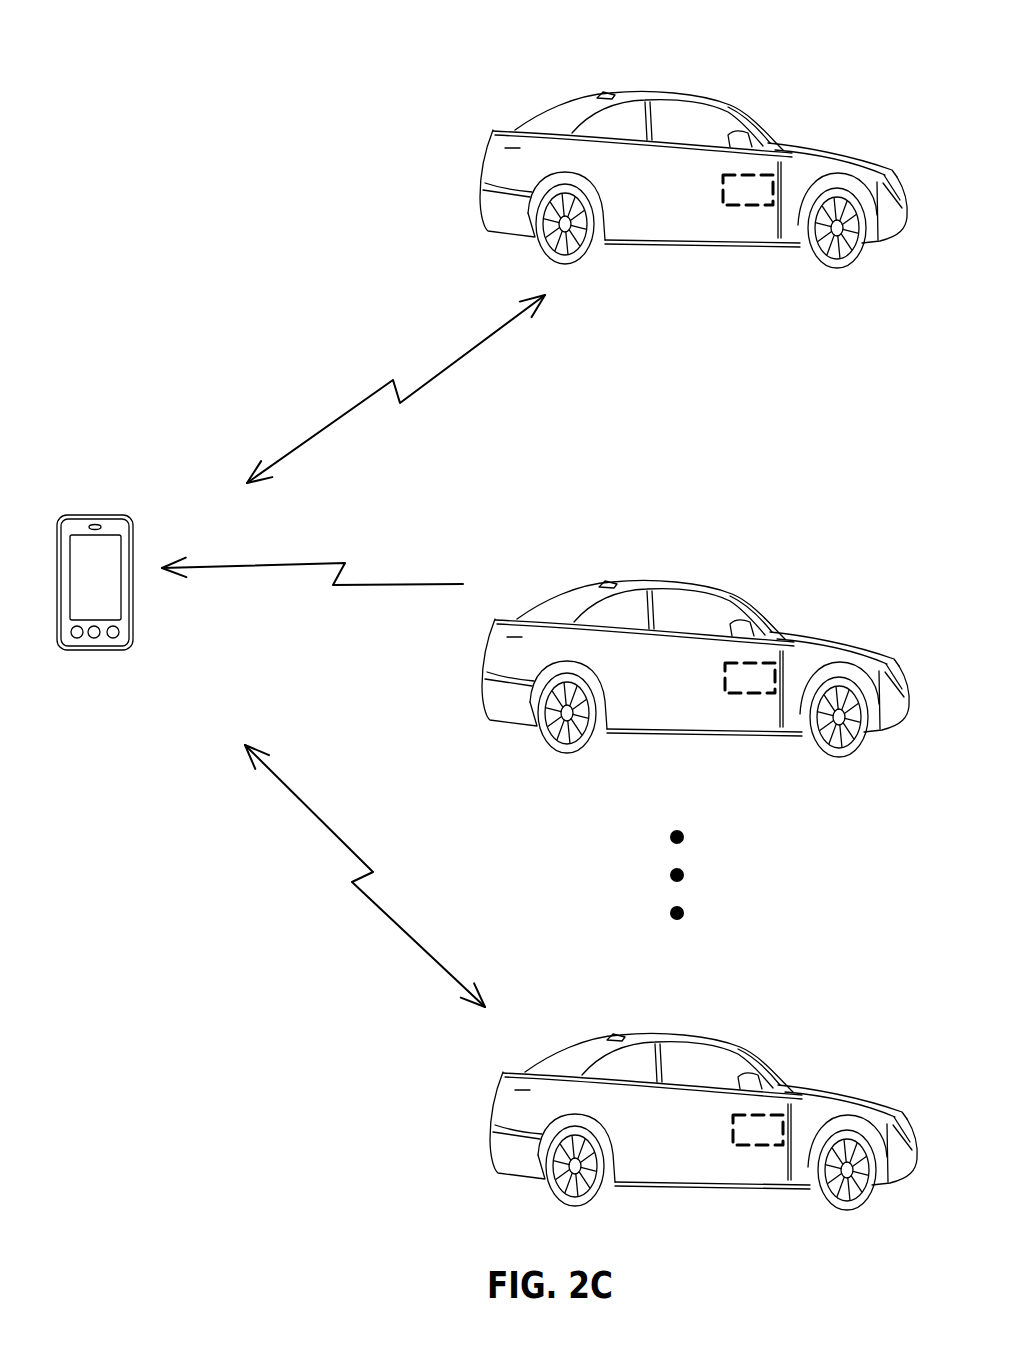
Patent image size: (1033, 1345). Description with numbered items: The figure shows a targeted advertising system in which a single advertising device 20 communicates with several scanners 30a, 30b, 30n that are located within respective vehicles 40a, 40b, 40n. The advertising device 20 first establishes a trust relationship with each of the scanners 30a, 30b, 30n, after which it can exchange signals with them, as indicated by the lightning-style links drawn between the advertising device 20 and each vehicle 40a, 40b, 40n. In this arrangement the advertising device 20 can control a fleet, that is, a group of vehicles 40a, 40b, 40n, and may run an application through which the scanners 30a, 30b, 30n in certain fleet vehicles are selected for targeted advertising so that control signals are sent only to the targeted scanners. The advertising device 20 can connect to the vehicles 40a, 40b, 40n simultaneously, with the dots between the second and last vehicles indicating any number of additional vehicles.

The advertising device 20 is at (93, 513).
The vehicle 40a is at (668, 97).
The scanner 30a is at (760, 176).
The vehicle 40b is at (670, 584).
The scanner 30b is at (762, 664).
The vehicle 40n is at (680, 1037).
The scanner 30n is at (770, 1116).